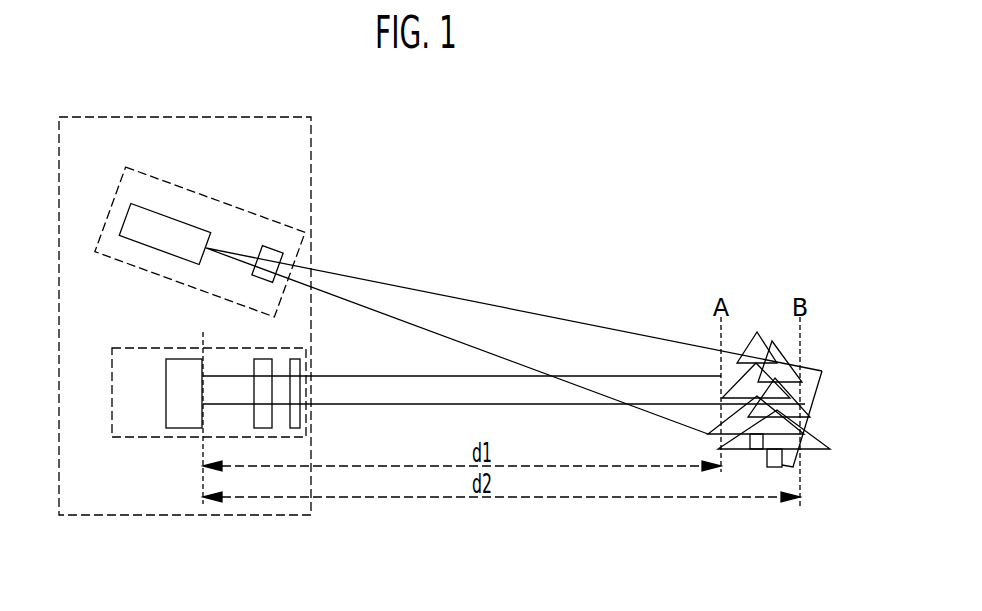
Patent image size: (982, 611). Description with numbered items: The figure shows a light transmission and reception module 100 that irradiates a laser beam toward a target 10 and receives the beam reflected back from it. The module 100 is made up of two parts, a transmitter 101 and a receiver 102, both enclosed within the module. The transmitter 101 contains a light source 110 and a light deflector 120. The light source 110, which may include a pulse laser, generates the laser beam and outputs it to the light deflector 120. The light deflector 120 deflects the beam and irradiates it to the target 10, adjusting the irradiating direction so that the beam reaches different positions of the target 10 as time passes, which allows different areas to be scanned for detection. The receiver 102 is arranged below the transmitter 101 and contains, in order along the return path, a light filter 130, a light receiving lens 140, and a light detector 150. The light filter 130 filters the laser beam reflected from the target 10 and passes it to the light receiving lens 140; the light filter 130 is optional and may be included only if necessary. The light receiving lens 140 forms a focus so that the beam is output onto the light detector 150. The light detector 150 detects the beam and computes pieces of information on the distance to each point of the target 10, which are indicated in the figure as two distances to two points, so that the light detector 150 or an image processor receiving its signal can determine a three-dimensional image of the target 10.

The light transmission and reception module 100 is at (92, 516).
The transmitter 101 is at (228, 204).
The light source 110 is at (157, 212).
The light deflector 120 is at (279, 251).
The receiver 102 is at (133, 348).
The light detector 150 is at (185, 428).
The light receiving lens 140 is at (263, 428).
The light filter 130 is at (296, 428).
The target 10 is at (757, 332).